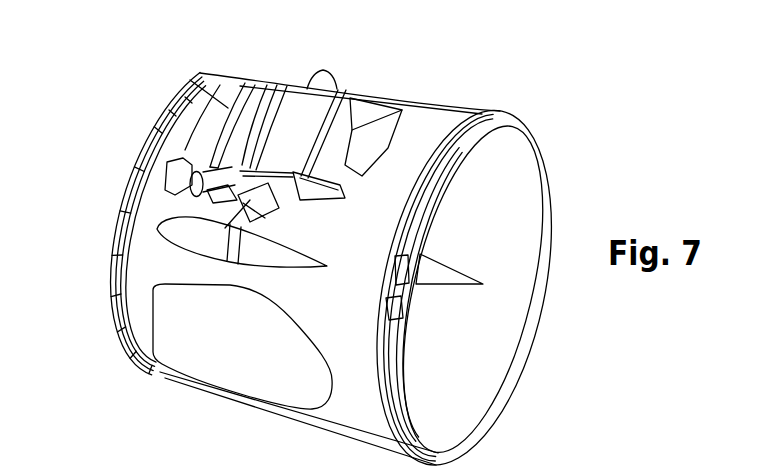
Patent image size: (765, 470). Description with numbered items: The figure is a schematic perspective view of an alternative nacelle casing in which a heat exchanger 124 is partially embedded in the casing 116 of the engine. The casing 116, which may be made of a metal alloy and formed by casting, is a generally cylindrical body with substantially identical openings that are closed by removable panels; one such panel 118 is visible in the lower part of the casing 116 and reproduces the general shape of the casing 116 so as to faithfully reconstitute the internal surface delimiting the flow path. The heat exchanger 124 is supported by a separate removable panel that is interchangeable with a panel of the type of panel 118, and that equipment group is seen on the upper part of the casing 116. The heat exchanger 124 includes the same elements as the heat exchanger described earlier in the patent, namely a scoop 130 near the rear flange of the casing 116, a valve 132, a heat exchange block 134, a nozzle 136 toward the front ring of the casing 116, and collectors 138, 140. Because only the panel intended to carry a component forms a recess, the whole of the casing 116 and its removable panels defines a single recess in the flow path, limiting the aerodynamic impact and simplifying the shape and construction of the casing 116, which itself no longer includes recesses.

The casing 116 is at (432, 122).
The panel 118 is at (205, 370).
The heat exchanger 124 is at (343, 82).
The scoop 130 is at (198, 72).
The valve 132 is at (266, 100).
The heat exchange block 134 is at (302, 107).
The nozzle 136 is at (373, 108).
The collector 138 is at (160, 216).
The collector 140 is at (310, 87).